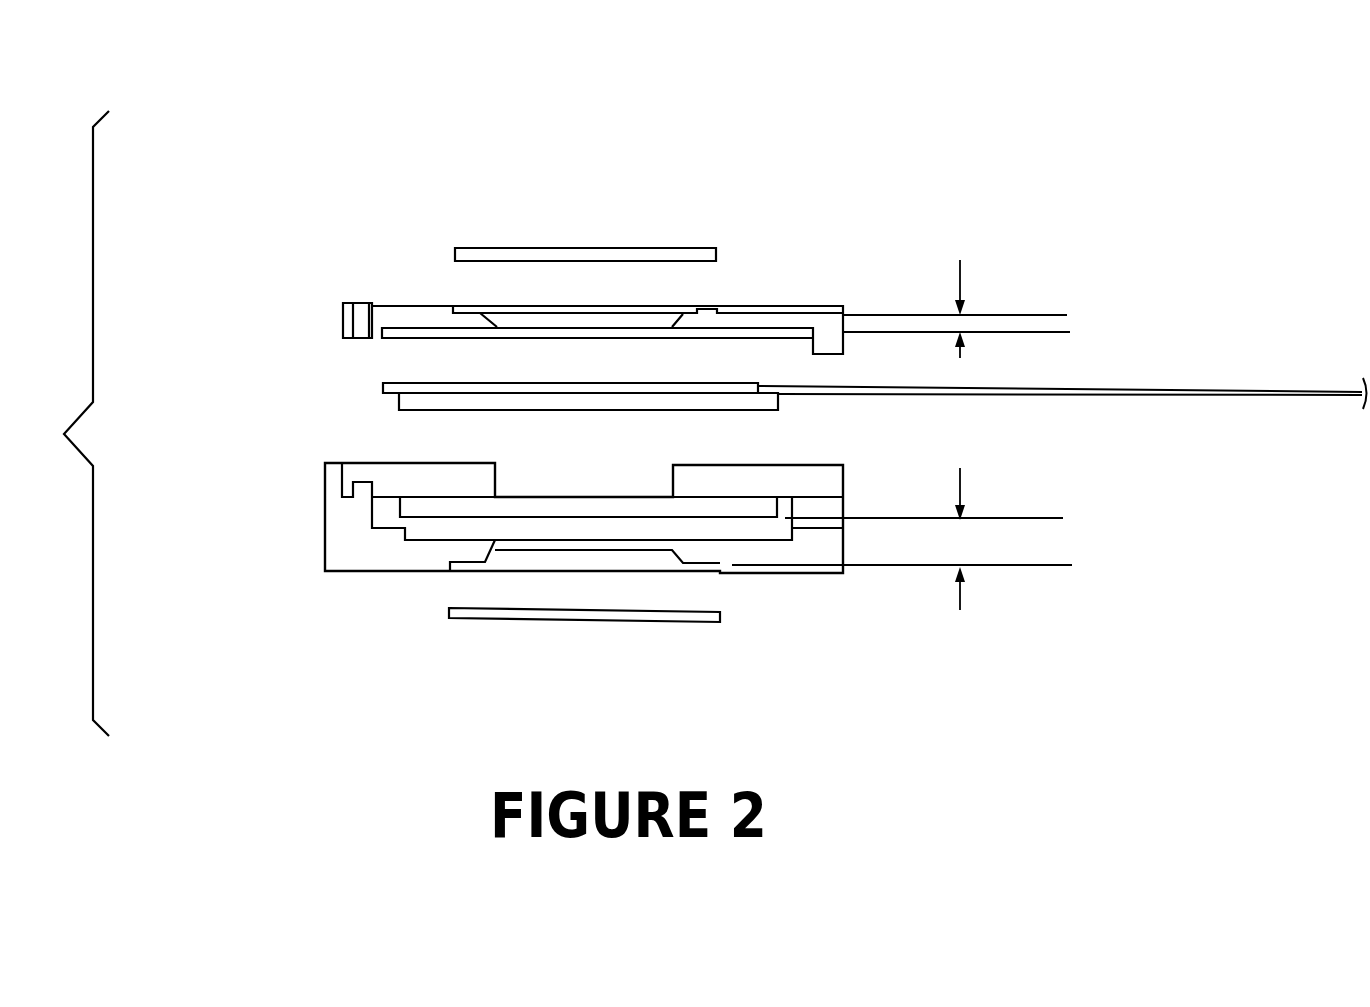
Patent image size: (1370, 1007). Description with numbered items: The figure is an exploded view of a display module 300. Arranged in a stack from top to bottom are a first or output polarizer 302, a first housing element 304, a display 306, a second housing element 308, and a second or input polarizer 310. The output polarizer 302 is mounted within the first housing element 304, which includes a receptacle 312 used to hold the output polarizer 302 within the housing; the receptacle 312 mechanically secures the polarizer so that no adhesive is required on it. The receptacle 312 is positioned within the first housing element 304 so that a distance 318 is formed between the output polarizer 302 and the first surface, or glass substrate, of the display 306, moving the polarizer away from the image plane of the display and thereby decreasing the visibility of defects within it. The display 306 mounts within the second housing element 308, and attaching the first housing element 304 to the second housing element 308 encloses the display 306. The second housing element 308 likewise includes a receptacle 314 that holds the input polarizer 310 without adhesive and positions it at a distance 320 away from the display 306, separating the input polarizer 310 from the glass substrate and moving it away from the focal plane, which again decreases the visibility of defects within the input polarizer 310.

The display module 300 is at (906, 228).
The output polarizer 302 is at (490, 248).
The first housing element 304 is at (342, 301).
The display 306 is at (383, 386).
The second housing element 308 is at (323, 520).
The input polarizer 310 is at (449, 613).
The receptacle 312 is at (697, 313).
The receptacle 314 is at (698, 573).
The distance 318 is at (962, 276).
The distance 320 is at (960, 490).